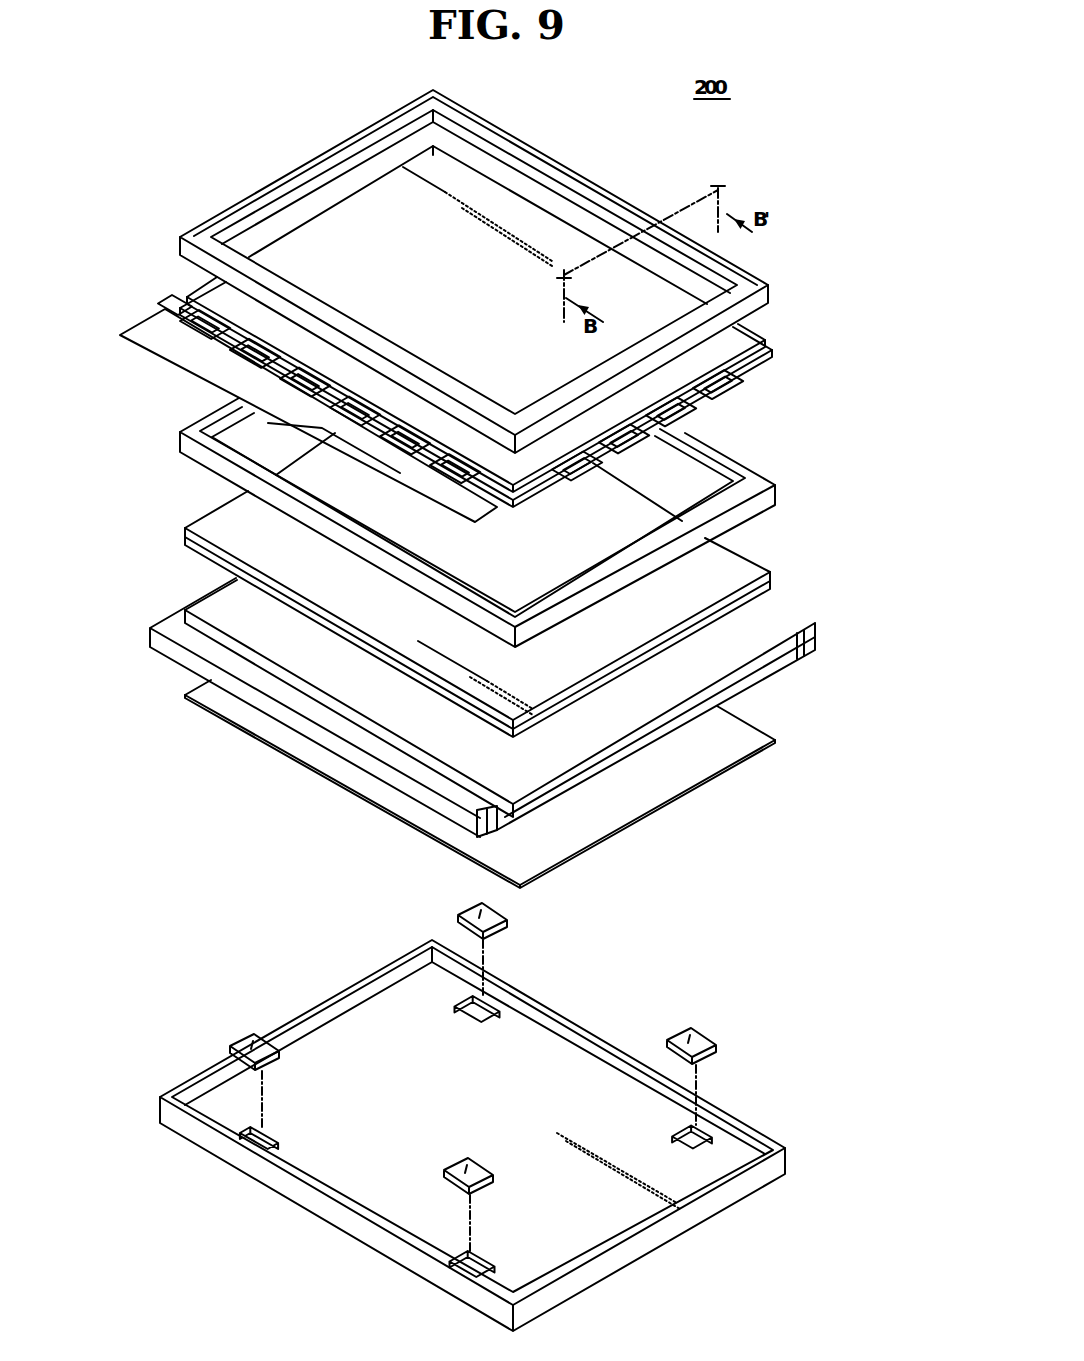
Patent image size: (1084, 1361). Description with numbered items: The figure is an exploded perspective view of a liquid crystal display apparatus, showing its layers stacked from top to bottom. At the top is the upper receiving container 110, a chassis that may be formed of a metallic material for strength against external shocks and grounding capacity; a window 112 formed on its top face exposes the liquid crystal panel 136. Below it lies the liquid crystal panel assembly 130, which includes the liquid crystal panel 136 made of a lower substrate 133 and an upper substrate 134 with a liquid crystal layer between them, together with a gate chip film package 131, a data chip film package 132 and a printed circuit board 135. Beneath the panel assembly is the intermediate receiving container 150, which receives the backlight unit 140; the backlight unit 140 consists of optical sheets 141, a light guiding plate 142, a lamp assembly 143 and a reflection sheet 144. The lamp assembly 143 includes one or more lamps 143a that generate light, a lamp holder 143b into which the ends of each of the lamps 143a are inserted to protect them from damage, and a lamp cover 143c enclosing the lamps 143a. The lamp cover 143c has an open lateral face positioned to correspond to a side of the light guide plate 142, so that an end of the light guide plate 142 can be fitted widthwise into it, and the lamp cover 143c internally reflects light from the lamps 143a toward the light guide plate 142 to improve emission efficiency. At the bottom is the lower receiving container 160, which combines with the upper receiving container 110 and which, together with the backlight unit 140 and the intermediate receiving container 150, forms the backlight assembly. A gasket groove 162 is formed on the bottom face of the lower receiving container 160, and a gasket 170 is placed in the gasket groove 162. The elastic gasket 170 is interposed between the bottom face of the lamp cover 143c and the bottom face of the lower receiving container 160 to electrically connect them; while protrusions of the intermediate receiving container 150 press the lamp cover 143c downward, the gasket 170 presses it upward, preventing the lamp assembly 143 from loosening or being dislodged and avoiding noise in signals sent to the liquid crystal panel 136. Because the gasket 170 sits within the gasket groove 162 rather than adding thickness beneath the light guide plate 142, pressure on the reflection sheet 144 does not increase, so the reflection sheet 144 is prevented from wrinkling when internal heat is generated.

The upper receiving container 110 is at (535, 271).
The window 112 is at (550, 170).
The liquid crystal panel assembly 130 is at (129, 305).
The gate chip film package 131 is at (757, 378).
The data chip film package 132 is at (162, 283).
The lower substrate 133 is at (763, 347).
The upper substrate 134 is at (752, 333).
The printed circuit board 135 is at (133, 332).
The liquid crystal panel 136 is at (562, 326).
The backlight unit 140 is at (103, 540).
The optical sheets 141 is at (182, 524).
The light guiding plate 142 is at (222, 612).
The lamp assembly 143 is at (713, 708).
The lamps 143a is at (790, 607).
The lamp holder 143b is at (818, 643).
The lamp cover 143c is at (813, 620).
The reflection sheet 144 is at (200, 690).
The intermediate receiving container 150 is at (778, 490).
The lower receiving container 160 is at (524, 1117).
The gasket groove 162 is at (713, 1125).
The gasket 170 is at (712, 1040).